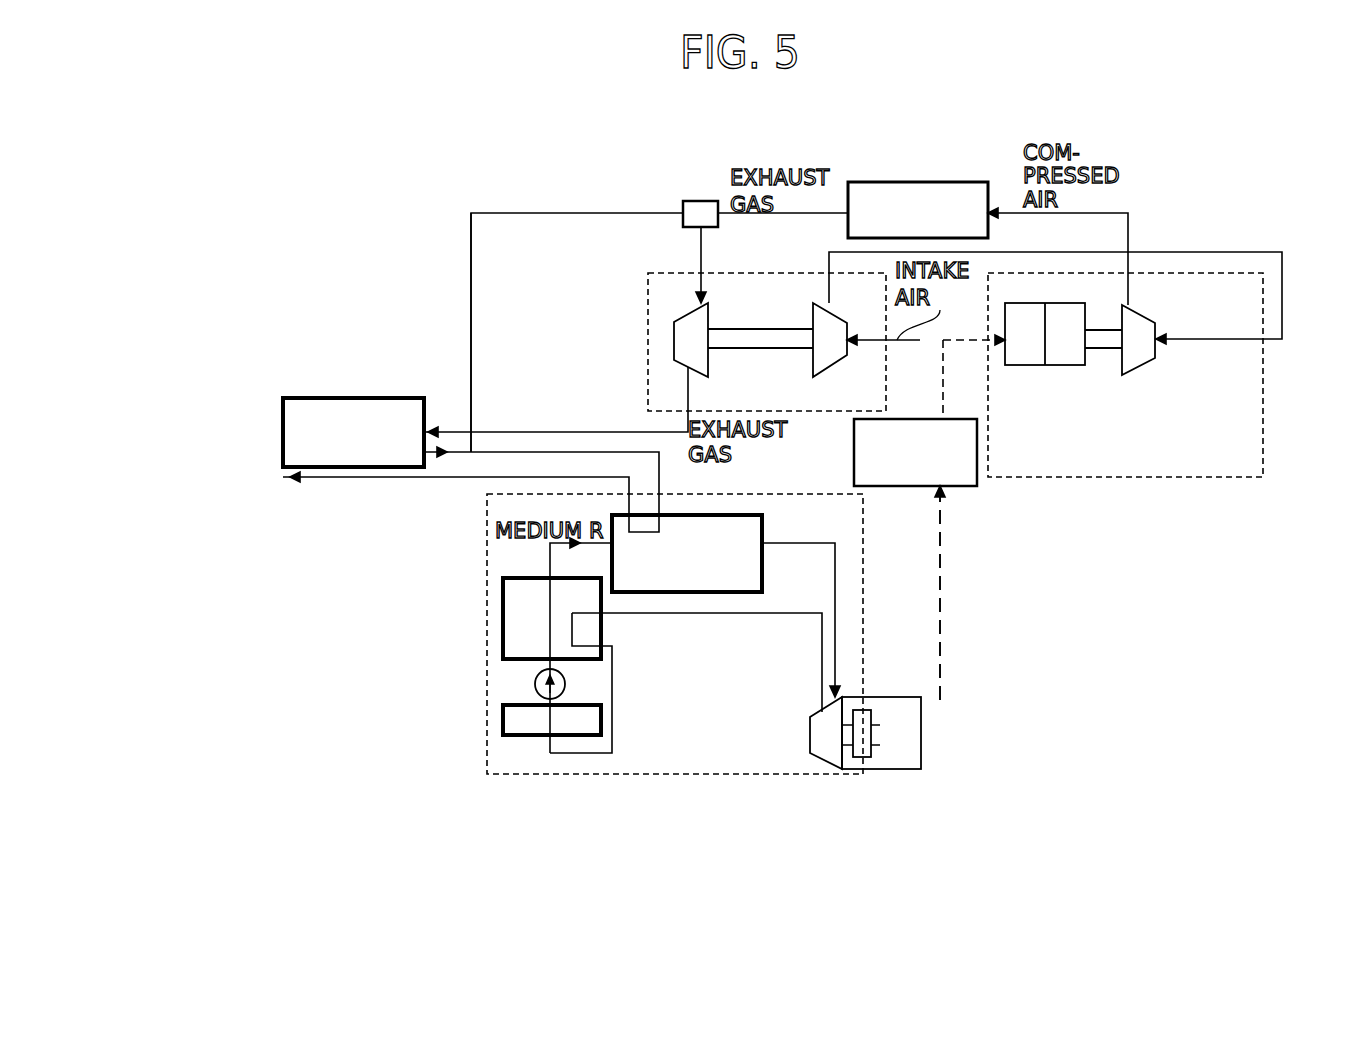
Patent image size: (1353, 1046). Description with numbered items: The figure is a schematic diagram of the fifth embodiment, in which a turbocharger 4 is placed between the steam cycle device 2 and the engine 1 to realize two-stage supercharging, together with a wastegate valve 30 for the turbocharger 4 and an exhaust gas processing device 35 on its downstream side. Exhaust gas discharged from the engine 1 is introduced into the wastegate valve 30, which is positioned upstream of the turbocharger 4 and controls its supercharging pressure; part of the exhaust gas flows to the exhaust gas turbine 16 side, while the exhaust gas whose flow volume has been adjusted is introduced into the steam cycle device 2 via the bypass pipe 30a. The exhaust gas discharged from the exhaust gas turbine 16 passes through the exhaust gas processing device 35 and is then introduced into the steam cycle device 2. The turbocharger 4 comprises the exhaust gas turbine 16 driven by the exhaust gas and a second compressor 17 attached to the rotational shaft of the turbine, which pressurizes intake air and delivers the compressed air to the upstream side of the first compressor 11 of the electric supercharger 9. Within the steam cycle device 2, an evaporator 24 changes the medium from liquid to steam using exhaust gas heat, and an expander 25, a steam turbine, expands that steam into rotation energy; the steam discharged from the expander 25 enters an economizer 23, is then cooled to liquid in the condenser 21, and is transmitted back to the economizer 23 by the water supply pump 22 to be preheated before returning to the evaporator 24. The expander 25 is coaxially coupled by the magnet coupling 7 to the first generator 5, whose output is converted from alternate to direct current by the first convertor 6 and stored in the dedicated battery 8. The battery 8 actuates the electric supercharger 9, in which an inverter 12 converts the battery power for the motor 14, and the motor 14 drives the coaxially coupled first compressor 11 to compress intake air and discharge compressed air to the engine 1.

The engine 1 is at (952, 182).
The steam cycle device 2 is at (561, 782).
The turbocharger 4 is at (670, 270).
The first generator 5 is at (895, 757).
The first convertor 6 is at (945, 712).
The magnet coupling 7 is at (863, 757).
The dedicated battery 8 is at (958, 486).
The electric supercharger 9 is at (1053, 483).
The first compressor 11 is at (1143, 360).
The inverter 12 is at (1025, 365).
The motor 14 is at (1060, 365).
The exhaust gas turbine 16 is at (674, 340).
The second compressor 17 is at (813, 355).
The condenser 21 is at (503, 722).
The water supply pump 22 is at (535, 686).
The economizer 23 is at (503, 618).
The evaporator 24 is at (762, 533).
The expander 25 is at (810, 735).
The wastegate valve 30 is at (712, 201).
The bypass pipe 30a is at (471, 272).
The exhaust gas processing device 35 is at (375, 398).